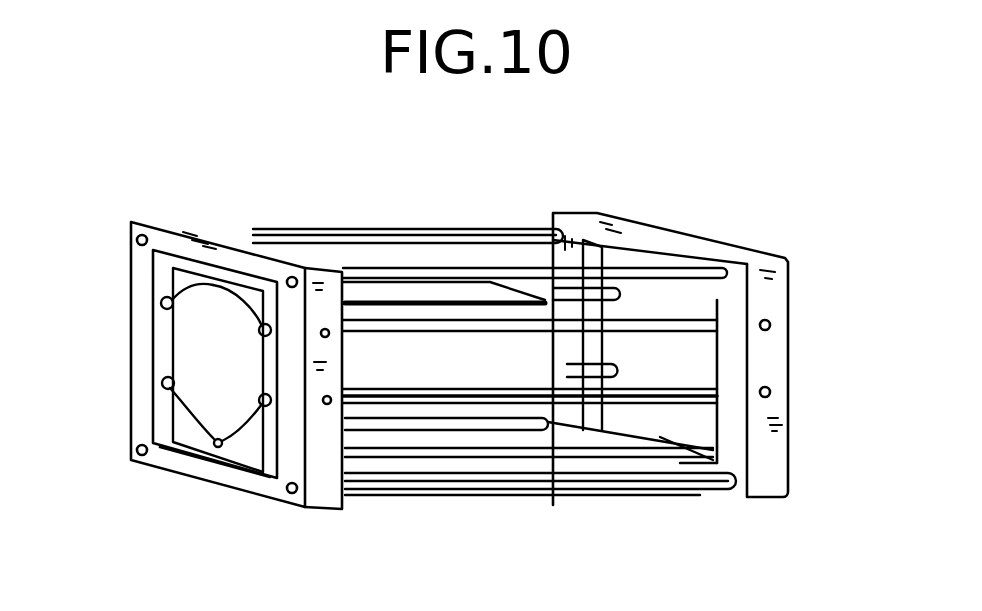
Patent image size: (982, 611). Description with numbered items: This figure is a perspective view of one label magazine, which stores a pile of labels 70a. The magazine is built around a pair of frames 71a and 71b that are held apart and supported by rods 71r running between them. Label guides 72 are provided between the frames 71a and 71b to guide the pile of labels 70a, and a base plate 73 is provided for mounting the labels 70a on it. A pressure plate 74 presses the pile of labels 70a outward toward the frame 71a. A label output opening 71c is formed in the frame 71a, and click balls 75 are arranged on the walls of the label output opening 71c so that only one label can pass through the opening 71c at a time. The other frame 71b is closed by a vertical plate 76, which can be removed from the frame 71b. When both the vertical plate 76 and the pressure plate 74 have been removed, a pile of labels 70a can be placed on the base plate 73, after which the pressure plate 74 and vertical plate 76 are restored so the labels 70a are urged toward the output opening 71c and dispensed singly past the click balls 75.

The labels 70a is at (185, 345).
The frame 71a is at (180, 225).
The frame 71b is at (615, 215).
The label output opening 71c is at (150, 398).
The rods 71r is at (415, 233).
The label guides 72 is at (543, 300).
The base plate 73 is at (697, 488).
The pressure plate 74 is at (575, 415).
The click balls 75 is at (213, 288).
The vertical plate 76 is at (685, 300).